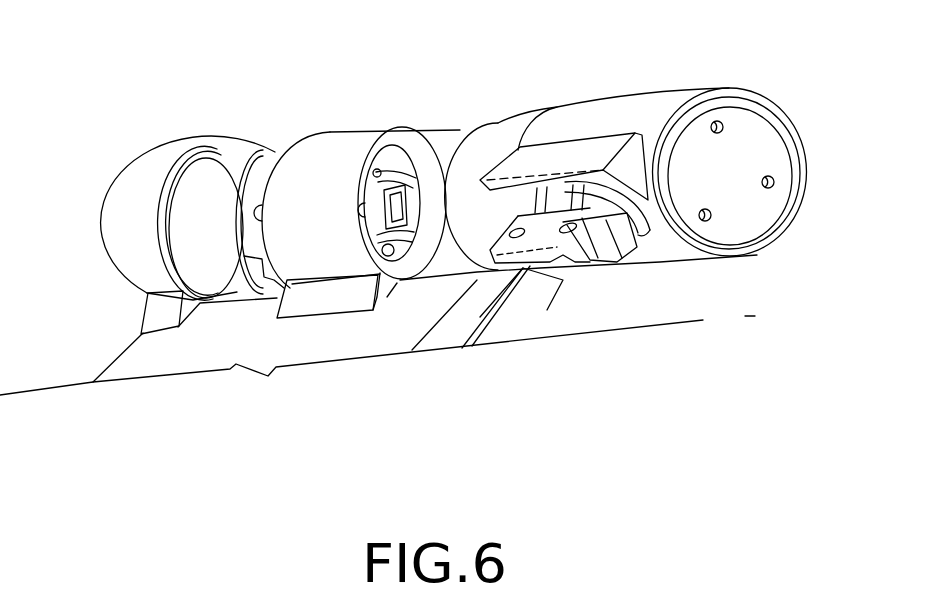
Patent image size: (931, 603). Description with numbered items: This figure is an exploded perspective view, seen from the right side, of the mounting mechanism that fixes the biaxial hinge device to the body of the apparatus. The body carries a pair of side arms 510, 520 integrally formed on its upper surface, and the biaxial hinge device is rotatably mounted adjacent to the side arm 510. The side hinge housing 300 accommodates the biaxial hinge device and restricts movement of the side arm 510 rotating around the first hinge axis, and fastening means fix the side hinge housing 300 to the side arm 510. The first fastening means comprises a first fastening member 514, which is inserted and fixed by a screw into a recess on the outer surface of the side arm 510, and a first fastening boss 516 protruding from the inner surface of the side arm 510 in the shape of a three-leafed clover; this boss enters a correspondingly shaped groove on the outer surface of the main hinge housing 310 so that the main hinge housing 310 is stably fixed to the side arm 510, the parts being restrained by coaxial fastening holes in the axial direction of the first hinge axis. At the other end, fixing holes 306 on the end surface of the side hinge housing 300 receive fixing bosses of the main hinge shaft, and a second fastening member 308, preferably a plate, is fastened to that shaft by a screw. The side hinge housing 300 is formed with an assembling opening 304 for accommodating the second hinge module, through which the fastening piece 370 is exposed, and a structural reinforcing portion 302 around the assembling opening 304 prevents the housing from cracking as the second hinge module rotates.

The side hinge housing 300 is at (667, 212).
The structural reinforcing portion 302 is at (605, 145).
The assembling opening 304 is at (561, 198).
The fixing holes 306 is at (747, 122).
The second fastening member 308 is at (776, 182).
The main hinge housing 310 is at (498, 132).
The fastening piece 370 is at (542, 245).
The side arm 510 is at (344, 140).
The first fastening member 514 is at (278, 138).
The first fastening boss 516 is at (422, 150).
The side arm 520 is at (125, 227).